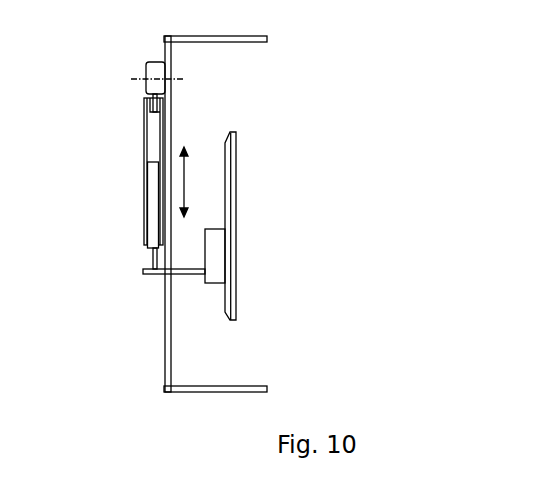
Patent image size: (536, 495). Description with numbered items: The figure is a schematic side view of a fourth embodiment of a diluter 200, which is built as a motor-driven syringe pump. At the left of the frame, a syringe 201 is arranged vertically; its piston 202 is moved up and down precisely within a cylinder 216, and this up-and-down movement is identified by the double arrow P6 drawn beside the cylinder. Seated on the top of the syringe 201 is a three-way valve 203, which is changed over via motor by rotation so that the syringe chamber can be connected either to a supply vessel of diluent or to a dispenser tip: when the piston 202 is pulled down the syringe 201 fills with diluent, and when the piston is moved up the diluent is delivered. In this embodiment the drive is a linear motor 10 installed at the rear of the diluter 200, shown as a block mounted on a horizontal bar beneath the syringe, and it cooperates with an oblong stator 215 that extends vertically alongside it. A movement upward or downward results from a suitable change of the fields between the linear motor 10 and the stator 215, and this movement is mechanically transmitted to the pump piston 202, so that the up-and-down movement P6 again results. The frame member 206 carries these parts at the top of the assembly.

The diluter 200 is at (363, 40).
The frame top bar 206 is at (203, 36).
The three-way valve 203 is at (157, 66).
The cylinder 216 is at (143, 119).
The piston 202 is at (147, 245).
The syringe 201 is at (136, 175).
The linear motor 10 is at (203, 279).
The oblong stator 215 is at (232, 199).
The double arrow P6 is at (194, 182).